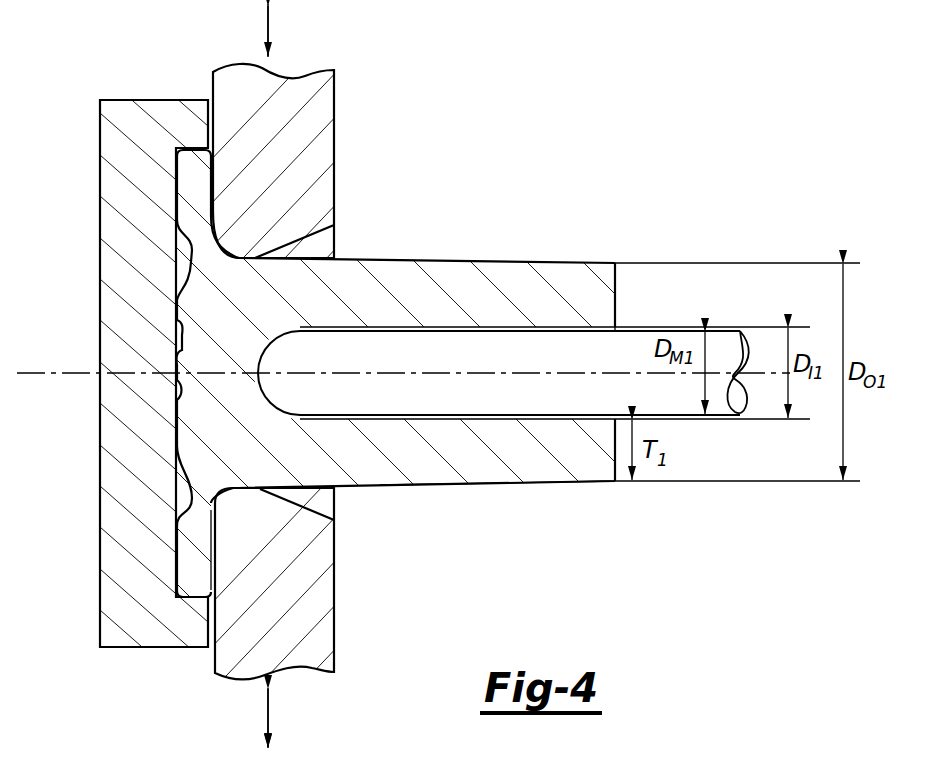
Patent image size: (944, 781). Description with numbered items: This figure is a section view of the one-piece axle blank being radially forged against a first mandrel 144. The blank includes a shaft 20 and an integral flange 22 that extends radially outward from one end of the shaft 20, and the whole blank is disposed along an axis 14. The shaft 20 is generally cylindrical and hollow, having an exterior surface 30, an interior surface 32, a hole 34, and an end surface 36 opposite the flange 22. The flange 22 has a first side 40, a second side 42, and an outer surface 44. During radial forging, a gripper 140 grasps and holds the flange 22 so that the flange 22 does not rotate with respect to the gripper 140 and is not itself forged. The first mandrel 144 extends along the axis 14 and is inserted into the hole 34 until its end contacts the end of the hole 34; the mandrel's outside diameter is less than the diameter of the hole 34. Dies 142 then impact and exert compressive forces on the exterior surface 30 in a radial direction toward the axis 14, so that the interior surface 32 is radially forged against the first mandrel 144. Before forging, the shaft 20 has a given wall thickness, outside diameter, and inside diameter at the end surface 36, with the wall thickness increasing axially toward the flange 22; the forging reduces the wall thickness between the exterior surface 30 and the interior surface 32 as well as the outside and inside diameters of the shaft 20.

The axis 14 is at (60, 372).
The shaft 20 is at (386, 390).
The flange 22 is at (197, 148).
The exterior surface 30 is at (555, 487).
The interior surface 32 is at (550, 418).
The hole 34 is at (621, 320).
The end surface 36 is at (615, 452).
The first side 40 is at (177, 575).
The second side 42 is at (215, 555).
The outer surface 44 is at (196, 598).
The gripper 140 is at (127, 99).
The dies 142 is at (320, 148).
The first mandrel 144 is at (723, 330).